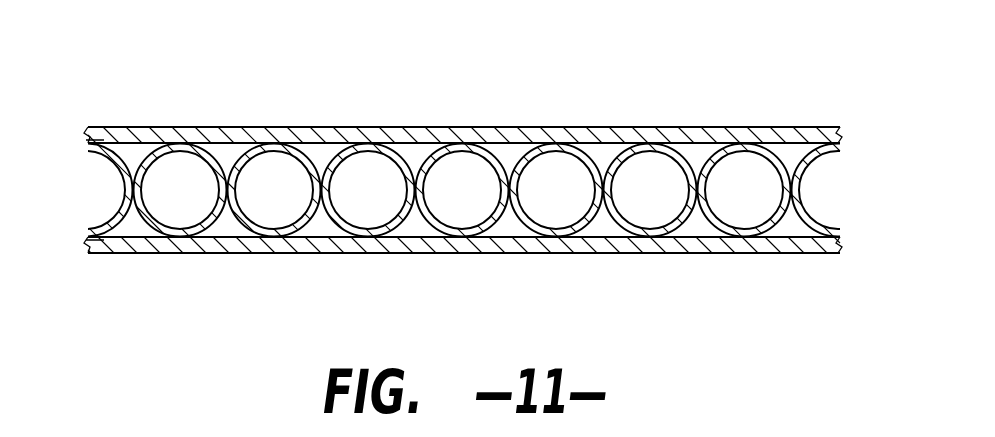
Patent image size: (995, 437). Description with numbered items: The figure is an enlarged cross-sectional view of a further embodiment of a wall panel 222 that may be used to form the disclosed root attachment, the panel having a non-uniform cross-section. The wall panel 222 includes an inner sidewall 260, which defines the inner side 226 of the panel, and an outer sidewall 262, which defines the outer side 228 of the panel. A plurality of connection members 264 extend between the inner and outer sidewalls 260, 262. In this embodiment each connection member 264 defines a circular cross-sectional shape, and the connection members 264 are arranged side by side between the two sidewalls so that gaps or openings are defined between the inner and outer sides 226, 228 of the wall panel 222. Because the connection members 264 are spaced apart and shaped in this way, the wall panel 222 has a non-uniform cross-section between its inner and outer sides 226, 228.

The wall panel 222 is at (722, 76).
The inner side 226 is at (378, 253).
The outer side 228 is at (503, 127).
The inner sidewall 260 is at (102, 242).
The outer sidewall 262 is at (93, 131).
The connection members 264 is at (224, 220).